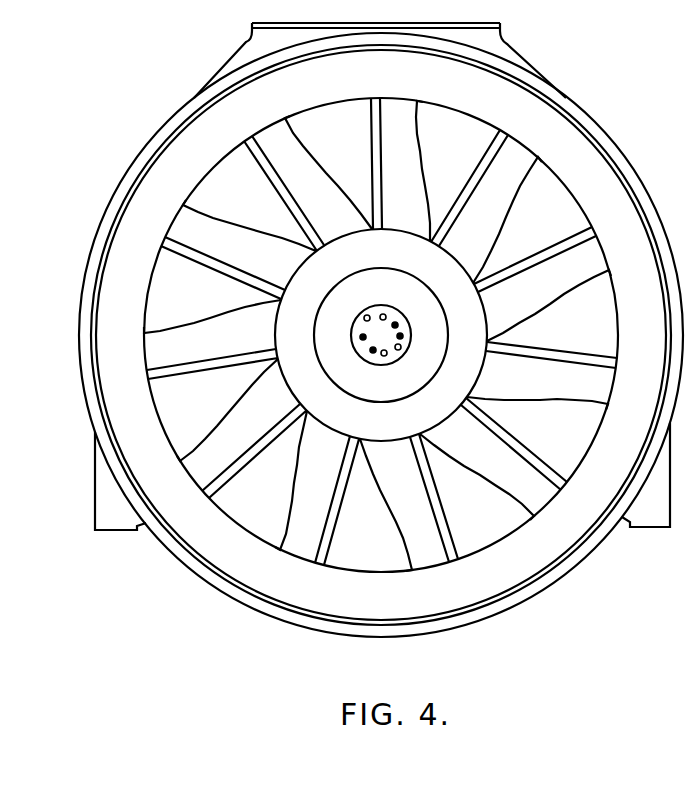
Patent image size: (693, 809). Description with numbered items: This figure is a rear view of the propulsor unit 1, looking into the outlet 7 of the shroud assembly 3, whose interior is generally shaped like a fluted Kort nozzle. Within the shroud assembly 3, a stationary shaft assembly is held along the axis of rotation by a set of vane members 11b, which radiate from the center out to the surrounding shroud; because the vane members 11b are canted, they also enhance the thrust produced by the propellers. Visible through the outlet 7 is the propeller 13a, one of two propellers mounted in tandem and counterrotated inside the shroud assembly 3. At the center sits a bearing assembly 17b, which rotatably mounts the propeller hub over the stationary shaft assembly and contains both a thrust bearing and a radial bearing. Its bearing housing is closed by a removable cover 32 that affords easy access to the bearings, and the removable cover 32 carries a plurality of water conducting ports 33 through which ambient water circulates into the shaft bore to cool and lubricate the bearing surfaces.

The propulsor unit 1 is at (153, 124).
The shroud assembly 3 is at (114, 188).
The outlet 7 is at (461, 157).
The vane members 11b is at (305, 486).
The propeller 13a is at (521, 563).
The bearing assembly 17b is at (277, 327).
The removable cover 32 is at (440, 338).
The water conducting ports 33 is at (383, 314).